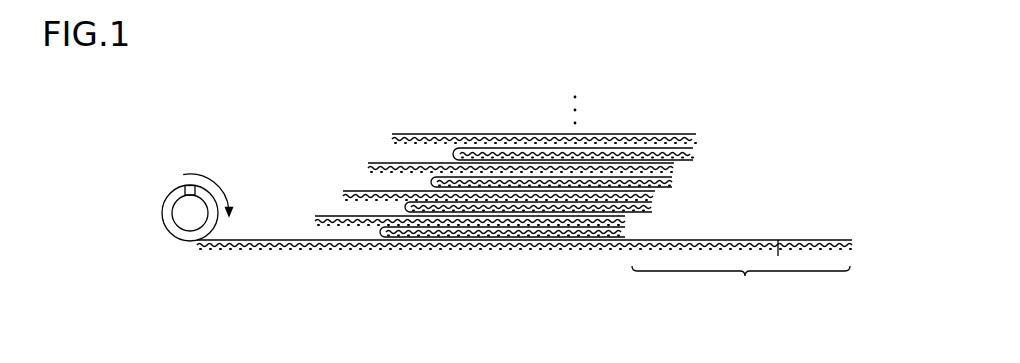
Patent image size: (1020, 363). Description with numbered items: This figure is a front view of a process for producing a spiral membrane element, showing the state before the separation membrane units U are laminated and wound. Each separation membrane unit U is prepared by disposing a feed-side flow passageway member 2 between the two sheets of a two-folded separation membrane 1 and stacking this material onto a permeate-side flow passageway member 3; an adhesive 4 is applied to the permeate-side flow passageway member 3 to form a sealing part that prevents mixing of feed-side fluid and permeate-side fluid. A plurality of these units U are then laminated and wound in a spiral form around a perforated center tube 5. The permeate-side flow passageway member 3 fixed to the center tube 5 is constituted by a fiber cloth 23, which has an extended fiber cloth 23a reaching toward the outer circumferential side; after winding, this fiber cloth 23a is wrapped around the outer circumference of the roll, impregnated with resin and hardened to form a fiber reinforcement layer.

The separation membrane 1 is at (537, 198).
The feed-side flow passageway member 2 is at (625, 234).
The permeate-side flow passageway member 3 is at (345, 191).
The adhesive 4 is at (657, 137).
The perforated center tube 5 is at (178, 238).
The fiber cloth 23 is at (310, 251).
The extended fiber cloth 23a is at (741, 279).
The separation membrane unit U is at (690, 178).